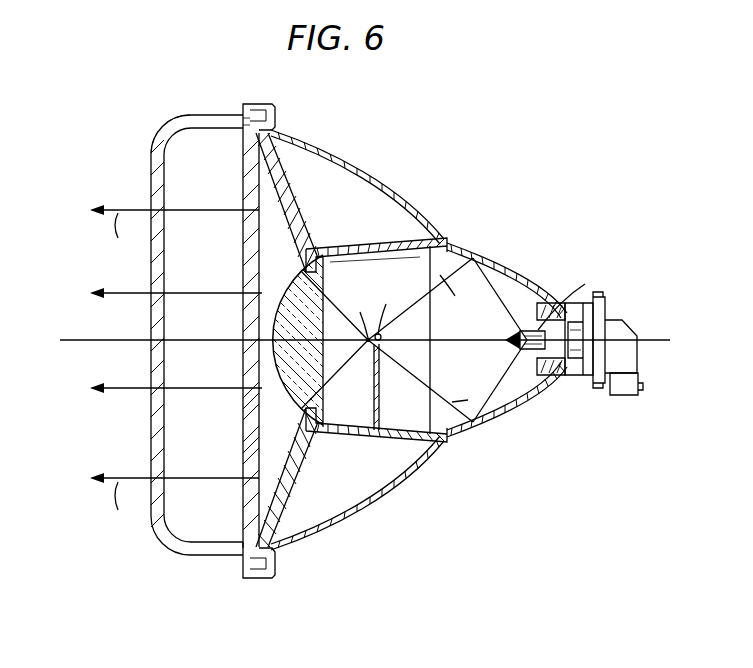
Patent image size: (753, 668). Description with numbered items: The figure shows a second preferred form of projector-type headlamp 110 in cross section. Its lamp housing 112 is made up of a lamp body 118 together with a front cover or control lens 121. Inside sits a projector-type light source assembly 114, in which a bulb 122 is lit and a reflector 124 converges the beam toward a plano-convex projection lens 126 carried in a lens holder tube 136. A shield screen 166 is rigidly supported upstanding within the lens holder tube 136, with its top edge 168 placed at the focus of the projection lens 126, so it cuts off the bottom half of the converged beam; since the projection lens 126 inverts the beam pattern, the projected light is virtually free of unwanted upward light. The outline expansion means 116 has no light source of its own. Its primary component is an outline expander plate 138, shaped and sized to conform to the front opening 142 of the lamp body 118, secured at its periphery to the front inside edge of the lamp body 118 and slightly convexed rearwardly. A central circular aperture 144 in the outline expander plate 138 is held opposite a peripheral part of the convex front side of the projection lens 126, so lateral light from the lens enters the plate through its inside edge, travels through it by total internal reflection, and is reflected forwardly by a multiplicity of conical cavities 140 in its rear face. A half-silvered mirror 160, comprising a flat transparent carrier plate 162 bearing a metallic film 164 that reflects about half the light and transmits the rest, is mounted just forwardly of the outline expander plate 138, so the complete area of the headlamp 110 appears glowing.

The headlamp 110 is at (496, 110).
The lamp housing 112 is at (396, 182).
The projector-type light source assembly 114 is at (480, 249).
The outline expansion means 116 is at (292, 530).
The lamp body 118 is at (362, 168).
The control lens 121 is at (150, 165).
The bulb 122 is at (530, 385).
The reflector 124 is at (526, 268).
The plano-convex projection lens 126 is at (272, 332).
The lens holder tube 136 is at (358, 246).
The outline expander plate 138 is at (252, 162).
The conical cavities 140 is at (272, 170).
The front opening 142 is at (250, 126).
The aperture 144 is at (300, 275).
The half-silvered mirror 160 is at (244, 186).
The carrier plate 162 is at (250, 410).
The metallic film 164 is at (250, 448).
The shield screen 166 is at (379, 380).
The top edge 168 is at (383, 340).